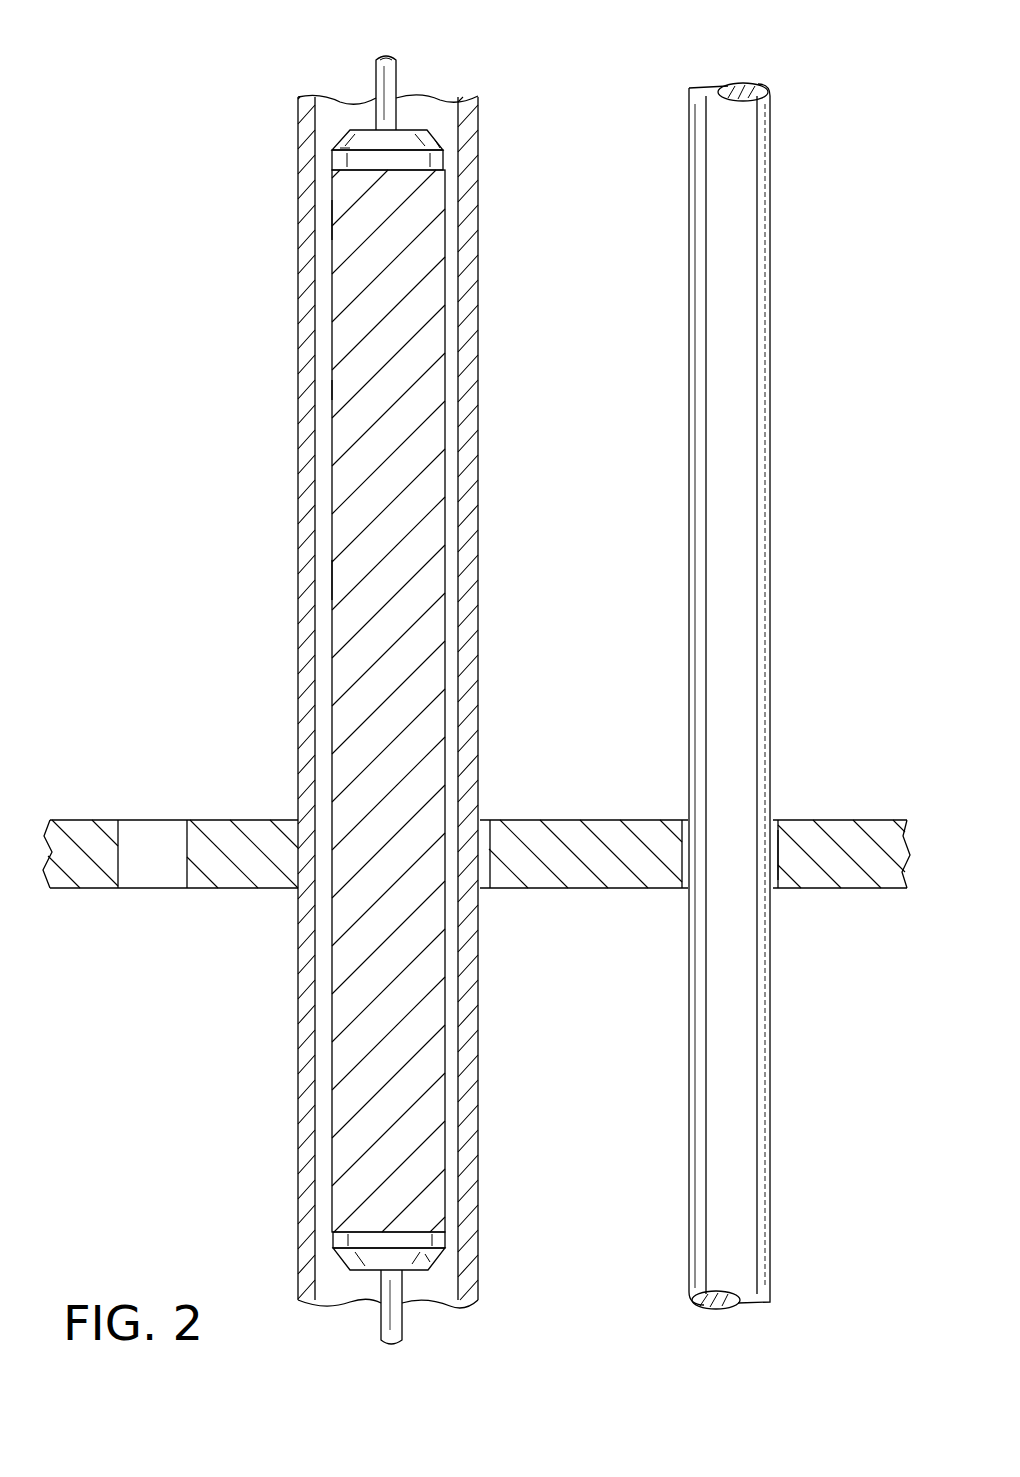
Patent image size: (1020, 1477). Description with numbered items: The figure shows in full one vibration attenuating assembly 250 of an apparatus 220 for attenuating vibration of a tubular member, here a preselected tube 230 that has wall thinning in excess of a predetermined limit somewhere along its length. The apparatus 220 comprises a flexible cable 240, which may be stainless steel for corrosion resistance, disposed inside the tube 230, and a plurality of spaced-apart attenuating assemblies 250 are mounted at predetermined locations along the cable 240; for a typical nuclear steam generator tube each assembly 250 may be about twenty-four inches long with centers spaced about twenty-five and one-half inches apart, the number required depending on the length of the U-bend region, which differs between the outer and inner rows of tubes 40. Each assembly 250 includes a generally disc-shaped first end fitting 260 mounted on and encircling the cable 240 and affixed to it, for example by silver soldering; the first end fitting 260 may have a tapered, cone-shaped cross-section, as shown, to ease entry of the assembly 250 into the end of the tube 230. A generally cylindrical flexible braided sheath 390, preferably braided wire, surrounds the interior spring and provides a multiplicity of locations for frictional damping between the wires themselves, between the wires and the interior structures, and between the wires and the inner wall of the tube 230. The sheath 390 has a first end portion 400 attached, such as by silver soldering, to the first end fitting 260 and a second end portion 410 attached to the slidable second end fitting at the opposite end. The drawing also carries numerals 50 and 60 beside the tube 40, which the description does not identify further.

The tube 40 is at (747, 148).
The mounting plate 50 is at (835, 888).
The aperture in plate 60 is at (777, 848).
The apparatus for attenuating vibration 220 is at (347, 390).
The preselected tube 230 is at (298, 288).
The flexible cable 240 is at (395, 72).
The vibration attenuating assembly 250 is at (363, 492).
The first end fitting 260 is at (423, 147).
The flexible braided sheath 390 is at (353, 577).
The first end portion 400 is at (352, 222).
The second end portion 410 is at (362, 1213).